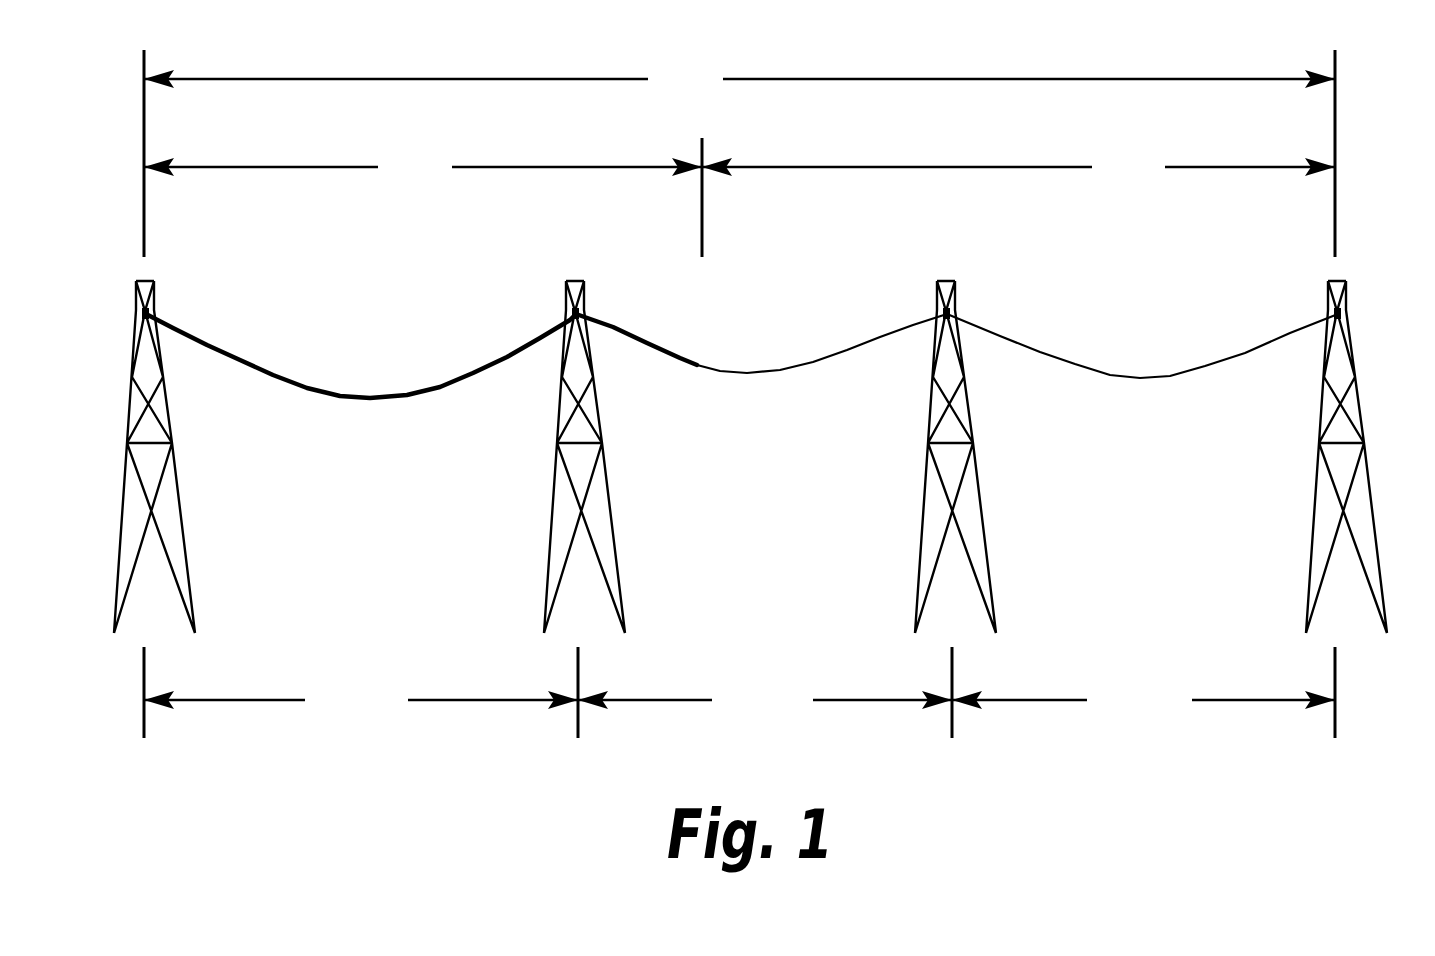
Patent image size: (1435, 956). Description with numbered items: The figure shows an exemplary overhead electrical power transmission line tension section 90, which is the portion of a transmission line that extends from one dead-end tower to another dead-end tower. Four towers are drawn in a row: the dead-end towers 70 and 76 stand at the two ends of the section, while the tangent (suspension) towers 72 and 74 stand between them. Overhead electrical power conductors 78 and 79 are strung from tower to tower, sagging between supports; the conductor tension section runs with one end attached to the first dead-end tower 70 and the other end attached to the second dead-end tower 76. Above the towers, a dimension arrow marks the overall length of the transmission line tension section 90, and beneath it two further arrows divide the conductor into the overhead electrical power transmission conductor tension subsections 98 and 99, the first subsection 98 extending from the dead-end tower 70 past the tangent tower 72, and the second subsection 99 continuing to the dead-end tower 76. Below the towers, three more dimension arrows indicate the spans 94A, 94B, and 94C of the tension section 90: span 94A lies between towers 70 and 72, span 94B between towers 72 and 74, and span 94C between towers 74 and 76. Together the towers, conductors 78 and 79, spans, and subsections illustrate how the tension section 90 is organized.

The dead-end tower 70 is at (146, 277).
The tangent (suspension) tower 72 is at (575, 277).
The tangent (suspension) tower 74 is at (947, 277).
The dead-end tower 76 is at (1336, 277).
The overhead electrical power conductor 78 is at (370, 396).
The overhead electrical power conductor 79 is at (847, 348).
The overhead electrical power transmission line tension section 90 is at (739, 153).
The overhead electrical power transmission conductor tension subsection 98 is at (423, 197).
The overhead electrical power transmission conductor tension subsection 99 is at (1018, 164).
The span 94A is at (361, 692).
The span 94B is at (765, 692).
The span 94C is at (1143, 692).